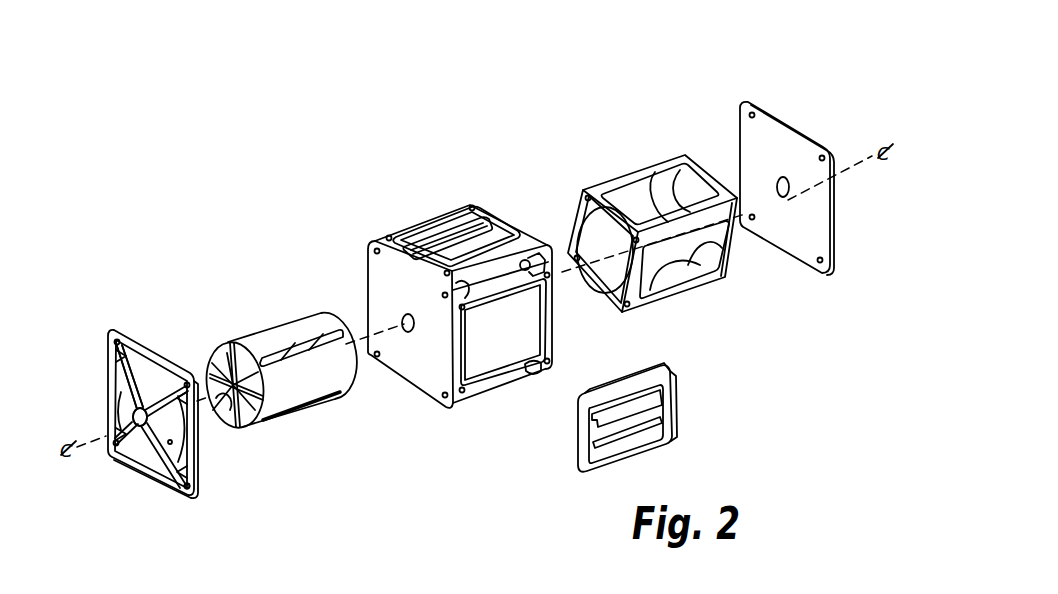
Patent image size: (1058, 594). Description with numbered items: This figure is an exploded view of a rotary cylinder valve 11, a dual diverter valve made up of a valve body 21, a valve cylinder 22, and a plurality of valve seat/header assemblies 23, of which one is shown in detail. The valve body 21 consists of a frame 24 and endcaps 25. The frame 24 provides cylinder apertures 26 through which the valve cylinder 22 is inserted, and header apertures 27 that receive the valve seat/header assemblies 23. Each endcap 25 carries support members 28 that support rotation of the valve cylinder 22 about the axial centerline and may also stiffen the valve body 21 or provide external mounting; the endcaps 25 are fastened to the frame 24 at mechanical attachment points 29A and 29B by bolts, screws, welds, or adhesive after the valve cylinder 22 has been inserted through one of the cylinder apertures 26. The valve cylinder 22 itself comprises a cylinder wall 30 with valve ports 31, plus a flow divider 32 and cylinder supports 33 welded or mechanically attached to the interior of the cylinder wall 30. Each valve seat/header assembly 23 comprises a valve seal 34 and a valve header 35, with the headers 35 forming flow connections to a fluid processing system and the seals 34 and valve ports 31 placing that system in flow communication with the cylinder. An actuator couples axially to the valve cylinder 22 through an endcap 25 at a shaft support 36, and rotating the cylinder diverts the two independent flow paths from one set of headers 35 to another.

The rotary cylinder valve 11 is at (415, 206).
The valve body 21 is at (689, 125).
The valve cylinder 22 is at (254, 325).
The valve seat/header assembly 23 is at (561, 460).
The frame 24 is at (656, 168).
The endcap 25 is at (140, 332).
The cylinder aperture 26 is at (597, 225).
The header aperture 27 is at (667, 261).
The support member 28 is at (133, 387).
The mechanical attachment point 29A is at (191, 492).
The mechanical attachment point 29B is at (528, 256).
The cylinder wall 30 is at (307, 392).
The valve port 31 is at (283, 366).
The flow divider 32 is at (228, 375).
The cylinder support 33 is at (261, 427).
The valve seal 34 is at (641, 375).
The valve header 35 is at (653, 438).
The shaft support 36 is at (142, 420).